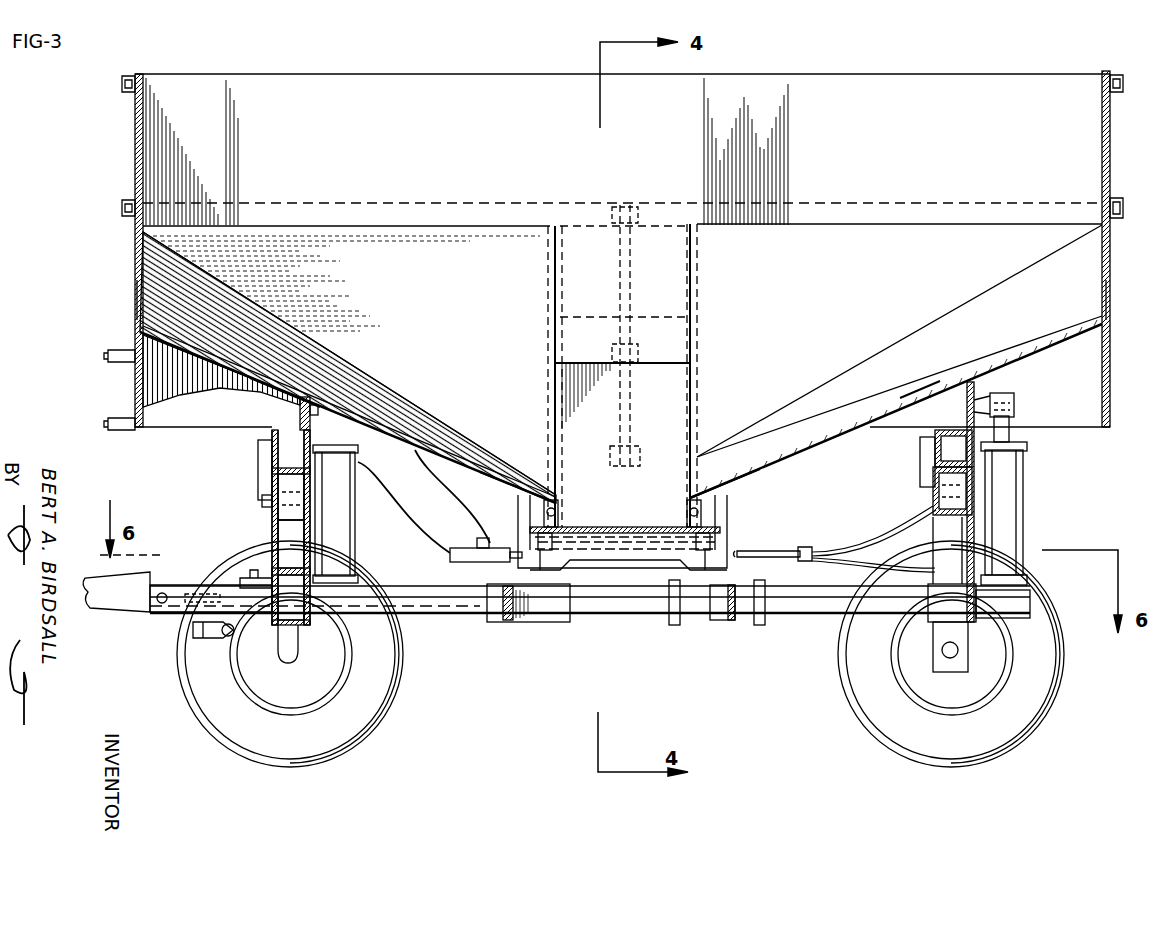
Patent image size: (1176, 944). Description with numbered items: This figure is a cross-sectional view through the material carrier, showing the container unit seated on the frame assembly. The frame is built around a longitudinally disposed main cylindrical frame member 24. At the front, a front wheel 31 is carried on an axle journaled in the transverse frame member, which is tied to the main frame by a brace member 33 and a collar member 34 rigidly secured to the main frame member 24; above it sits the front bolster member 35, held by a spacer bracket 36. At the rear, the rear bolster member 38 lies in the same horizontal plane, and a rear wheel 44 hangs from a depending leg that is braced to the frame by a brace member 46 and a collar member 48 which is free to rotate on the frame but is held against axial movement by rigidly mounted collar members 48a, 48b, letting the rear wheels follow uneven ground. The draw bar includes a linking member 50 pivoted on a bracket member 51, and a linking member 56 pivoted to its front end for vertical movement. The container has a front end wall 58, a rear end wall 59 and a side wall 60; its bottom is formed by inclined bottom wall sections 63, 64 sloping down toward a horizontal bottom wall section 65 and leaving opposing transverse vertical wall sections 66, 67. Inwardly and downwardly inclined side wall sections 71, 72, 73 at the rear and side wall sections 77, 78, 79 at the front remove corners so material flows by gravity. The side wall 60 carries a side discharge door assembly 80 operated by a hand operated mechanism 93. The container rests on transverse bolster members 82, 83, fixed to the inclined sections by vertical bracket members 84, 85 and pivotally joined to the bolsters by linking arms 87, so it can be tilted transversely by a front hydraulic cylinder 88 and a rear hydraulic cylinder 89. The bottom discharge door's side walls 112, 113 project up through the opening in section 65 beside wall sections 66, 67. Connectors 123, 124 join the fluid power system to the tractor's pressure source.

The main cylindrical frame member 24 is at (622, 618).
The front wheel 31 is at (385, 708).
The brace member 33 is at (505, 624).
The collar member 34 is at (548, 624).
The front bolster member 35 is at (272, 512).
The spacer bracket 36 is at (272, 538).
The rear bolster member 38 is at (933, 480).
The rear wheel 44 is at (1052, 690).
The brace member 46 is at (760, 626).
The collar member 48 is at (722, 622).
The collar member 48a is at (673, 626).
The collar member 48b is at (818, 562).
The linking member 50 is at (200, 588).
The bracket member 51 is at (252, 580).
The linking member 56 is at (118, 614).
The front end wall 58 is at (135, 302).
The rear end wall 59 is at (1110, 300).
The side wall 60 is at (800, 74).
The inclined bottom wall section 63 is at (915, 402).
The inclined bottom wall section 64 is at (280, 378).
The horizontal bottom wall section 65 is at (607, 526).
The transverse vertical wall section 66 is at (552, 528).
The transverse vertical wall section 67 is at (696, 540).
The side wall section 71 is at (769, 466).
The intermediate side wall section 72 is at (986, 341).
The side wall section 73 is at (859, 284).
The side wall section 77 is at (524, 474).
The side wall section 78 is at (386, 398).
The side wall section 79 is at (444, 310).
The side discharge door assembly 80 is at (665, 410).
The transverse bolster member 82 is at (272, 450).
The transverse bolster member 83 is at (935, 452).
The vertical bracket member 84 is at (300, 414).
The vertical bracket member 85 is at (967, 414).
The linking arms 87 is at (1016, 460).
The front hydraulic cylinder 88 is at (392, 540).
The rear hydraulic cylinder 89 is at (1020, 504).
The hand operated mechanism 93 is at (628, 297).
The side wall 112 is at (560, 508).
The side wall 113 is at (692, 505).
The connector 123 is at (118, 350).
The connector 124 is at (122, 430).